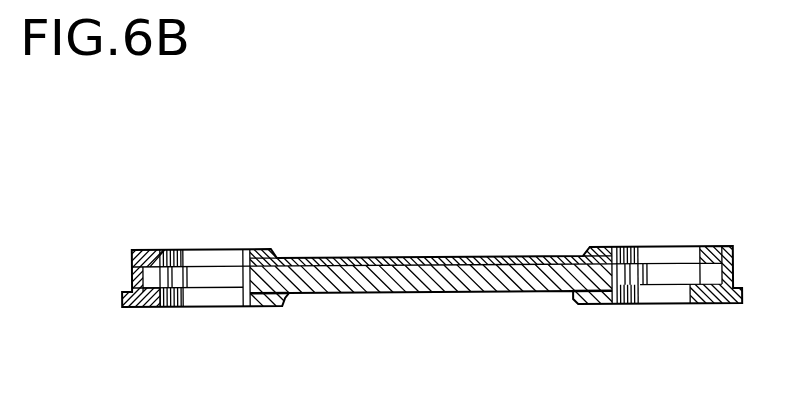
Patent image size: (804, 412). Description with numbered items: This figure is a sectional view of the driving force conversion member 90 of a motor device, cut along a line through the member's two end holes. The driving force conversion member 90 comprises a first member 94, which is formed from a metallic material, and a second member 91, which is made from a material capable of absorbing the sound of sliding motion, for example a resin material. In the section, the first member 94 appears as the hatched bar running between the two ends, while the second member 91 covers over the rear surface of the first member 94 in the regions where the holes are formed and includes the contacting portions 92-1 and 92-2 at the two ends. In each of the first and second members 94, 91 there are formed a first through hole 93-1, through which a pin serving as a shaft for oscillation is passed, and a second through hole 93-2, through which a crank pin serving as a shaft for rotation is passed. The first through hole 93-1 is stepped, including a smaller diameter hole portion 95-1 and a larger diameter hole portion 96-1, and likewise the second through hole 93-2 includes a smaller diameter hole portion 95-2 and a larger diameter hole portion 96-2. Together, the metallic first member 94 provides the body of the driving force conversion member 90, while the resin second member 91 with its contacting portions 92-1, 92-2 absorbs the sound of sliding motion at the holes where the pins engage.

The driving force conversion member 90 is at (186, 283).
The second member 91 is at (392, 259).
The contacting portion 92-1 is at (257, 251).
The contacting portion 92-2 is at (608, 247).
The first through hole 93-1 is at (160, 250).
The second through hole 93-2 is at (660, 248).
The first member 94 is at (398, 294).
The smaller diameter hole portion 95-1 is at (190, 307).
The smaller diameter hole portion 95-2 is at (643, 302).
The larger diameter hole portion 96-1 is at (242, 307).
The larger diameter hole portion 96-2 is at (697, 302).